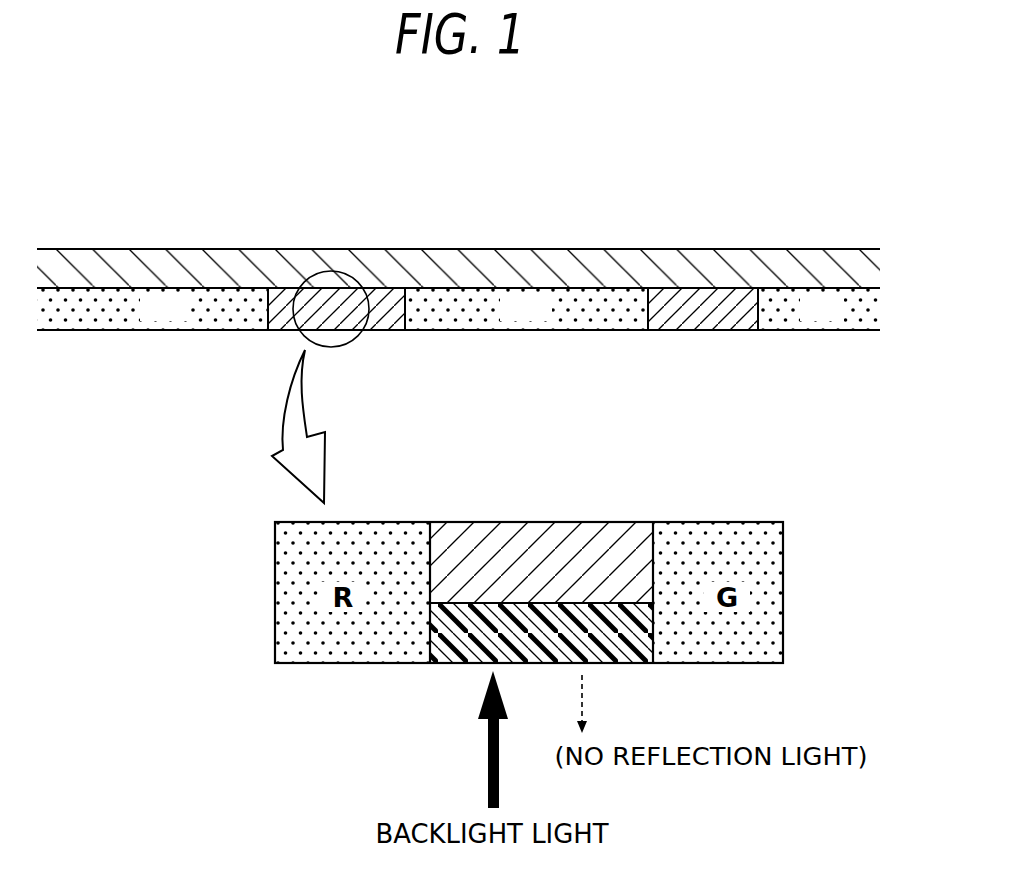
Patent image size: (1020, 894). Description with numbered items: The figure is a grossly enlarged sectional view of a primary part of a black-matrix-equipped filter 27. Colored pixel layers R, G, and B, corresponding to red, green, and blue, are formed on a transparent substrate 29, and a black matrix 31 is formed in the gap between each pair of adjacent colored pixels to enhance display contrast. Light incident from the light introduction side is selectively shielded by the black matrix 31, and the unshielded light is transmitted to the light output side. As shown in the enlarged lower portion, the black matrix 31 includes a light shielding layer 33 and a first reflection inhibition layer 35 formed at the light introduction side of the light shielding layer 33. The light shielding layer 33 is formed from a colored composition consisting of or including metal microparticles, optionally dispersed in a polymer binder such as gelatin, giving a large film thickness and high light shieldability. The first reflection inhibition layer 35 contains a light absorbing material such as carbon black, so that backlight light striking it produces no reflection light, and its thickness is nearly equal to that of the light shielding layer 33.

The black-matrix-equipped filter 27 is at (809, 240).
The transparent substrate 29 is at (500, 248).
The black matrix 31 is at (324, 262).
The light shielding layer 33 is at (508, 530).
The first reflection inhibition layer 35 is at (455, 656).